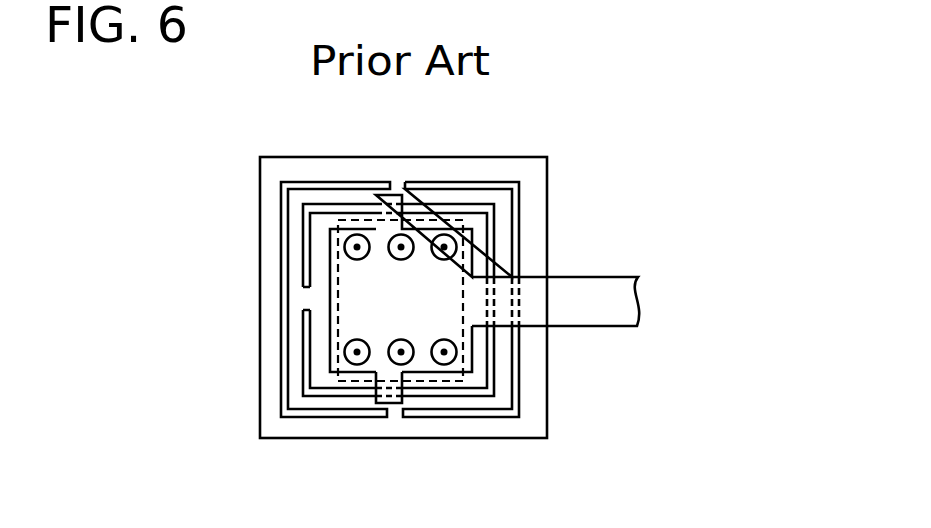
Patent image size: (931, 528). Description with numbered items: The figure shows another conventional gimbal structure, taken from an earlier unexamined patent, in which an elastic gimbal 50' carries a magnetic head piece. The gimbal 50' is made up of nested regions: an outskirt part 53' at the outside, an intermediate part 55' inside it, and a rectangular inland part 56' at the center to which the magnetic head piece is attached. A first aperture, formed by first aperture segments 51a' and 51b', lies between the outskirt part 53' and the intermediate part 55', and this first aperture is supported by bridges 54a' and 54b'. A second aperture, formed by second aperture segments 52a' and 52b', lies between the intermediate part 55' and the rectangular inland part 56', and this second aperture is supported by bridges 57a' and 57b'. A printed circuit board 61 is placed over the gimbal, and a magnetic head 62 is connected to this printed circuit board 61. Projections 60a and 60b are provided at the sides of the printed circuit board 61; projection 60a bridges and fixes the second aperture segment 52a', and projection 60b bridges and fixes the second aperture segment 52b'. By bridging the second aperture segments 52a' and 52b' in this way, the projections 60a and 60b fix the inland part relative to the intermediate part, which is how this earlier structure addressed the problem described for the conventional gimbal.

The gimbal 50' is at (358, 291).
The outskirt part 53' is at (279, 135).
The first aperture segment 51a' is at (335, 255).
The first aperture segment 51b' is at (486, 255).
The second aperture segment 52a' is at (468, 238).
The second aperture segment 52b' is at (273, 353).
The bridge 54a' is at (420, 232).
The bridge 54b' is at (414, 446).
The intermediate part 55' is at (555, 237).
The rectangular inland part 56' is at (510, 362).
The bridge 57a' is at (560, 278).
The bridge 57b' is at (240, 279).
The projection 60a is at (400, 195).
The projection 60b is at (391, 405).
The printed circuit board 61 is at (385, 318).
The magnetic head 62 is at (441, 384).